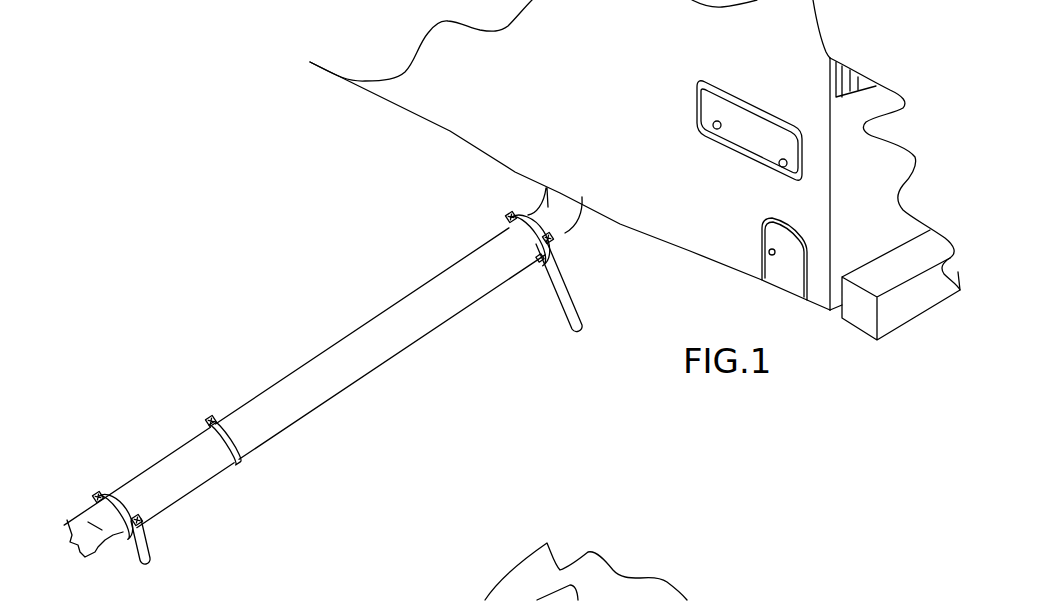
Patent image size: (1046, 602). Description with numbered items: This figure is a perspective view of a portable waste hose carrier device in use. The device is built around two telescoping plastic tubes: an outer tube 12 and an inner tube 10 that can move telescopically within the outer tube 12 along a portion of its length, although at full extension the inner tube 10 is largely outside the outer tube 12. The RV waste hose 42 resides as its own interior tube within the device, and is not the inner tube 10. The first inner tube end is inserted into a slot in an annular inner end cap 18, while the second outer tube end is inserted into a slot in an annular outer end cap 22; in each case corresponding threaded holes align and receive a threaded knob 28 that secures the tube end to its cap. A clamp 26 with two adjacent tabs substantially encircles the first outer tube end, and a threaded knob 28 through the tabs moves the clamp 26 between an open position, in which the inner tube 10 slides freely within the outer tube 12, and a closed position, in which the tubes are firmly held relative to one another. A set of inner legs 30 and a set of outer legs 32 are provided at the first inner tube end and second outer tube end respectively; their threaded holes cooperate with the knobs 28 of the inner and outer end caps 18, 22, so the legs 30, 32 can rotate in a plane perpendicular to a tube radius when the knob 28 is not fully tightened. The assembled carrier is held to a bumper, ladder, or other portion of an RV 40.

The inner tube 10 is at (190, 478).
The outer tube 12 is at (328, 382).
The inner end cap 18 is at (127, 498).
The outer end cap 22 is at (552, 230).
The clamp 26 is at (240, 458).
The threaded knob 28 is at (507, 218).
The inner legs 30 is at (142, 555).
The outer legs 32 is at (573, 317).
The RV 40 is at (450, 115).
The RV waste hose 42 is at (548, 207).